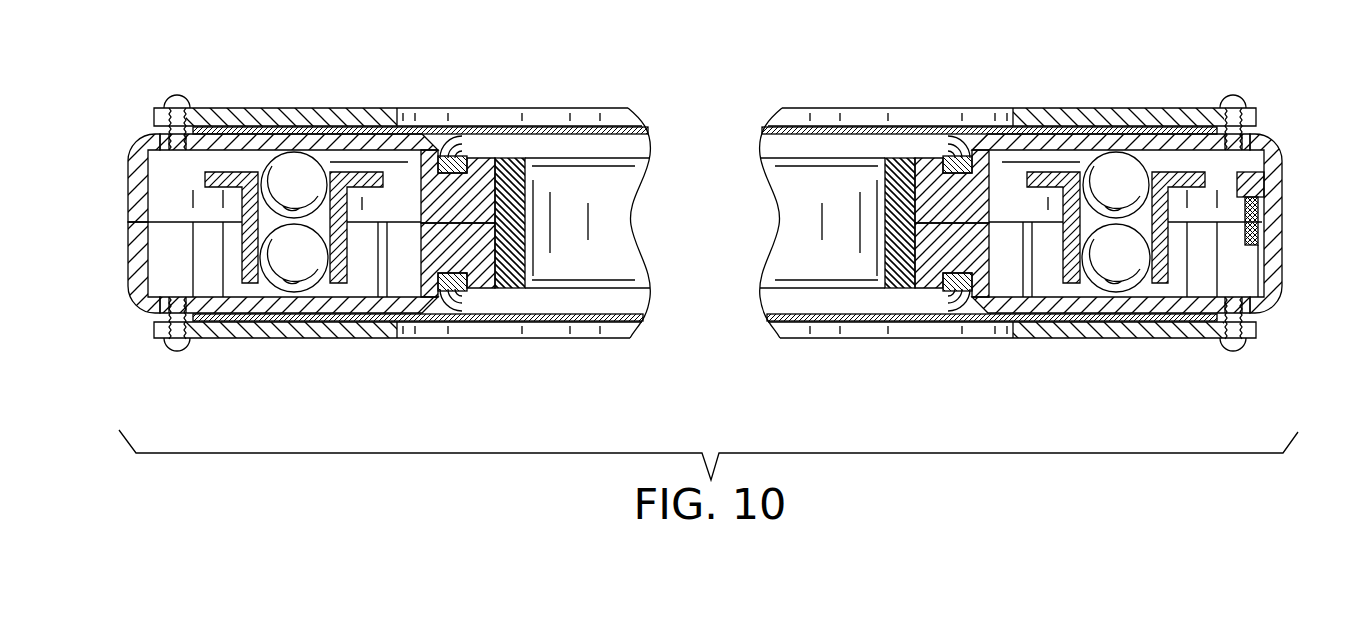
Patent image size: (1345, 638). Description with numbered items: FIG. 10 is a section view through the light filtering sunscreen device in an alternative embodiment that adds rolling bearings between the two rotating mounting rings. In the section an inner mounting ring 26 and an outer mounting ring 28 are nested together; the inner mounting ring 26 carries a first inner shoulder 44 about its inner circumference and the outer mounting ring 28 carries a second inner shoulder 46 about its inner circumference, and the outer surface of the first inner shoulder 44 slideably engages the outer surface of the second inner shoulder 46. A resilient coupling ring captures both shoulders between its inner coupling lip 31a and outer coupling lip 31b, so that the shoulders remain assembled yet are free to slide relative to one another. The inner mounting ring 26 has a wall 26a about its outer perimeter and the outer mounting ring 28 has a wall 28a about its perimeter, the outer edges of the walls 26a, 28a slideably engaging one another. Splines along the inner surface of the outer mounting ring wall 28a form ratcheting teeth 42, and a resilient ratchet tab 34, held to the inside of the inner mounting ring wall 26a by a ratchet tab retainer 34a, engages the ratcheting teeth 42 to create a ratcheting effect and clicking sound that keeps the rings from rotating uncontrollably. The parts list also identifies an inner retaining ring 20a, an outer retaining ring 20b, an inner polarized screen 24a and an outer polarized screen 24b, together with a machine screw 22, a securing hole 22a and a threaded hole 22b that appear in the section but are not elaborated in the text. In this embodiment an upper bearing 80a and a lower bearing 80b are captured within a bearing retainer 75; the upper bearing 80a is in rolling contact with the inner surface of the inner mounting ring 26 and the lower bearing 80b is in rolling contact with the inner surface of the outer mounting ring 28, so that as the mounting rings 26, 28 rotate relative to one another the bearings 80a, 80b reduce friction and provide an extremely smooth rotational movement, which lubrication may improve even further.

The inner retaining ring 20a is at (503, 118).
The outer retaining ring 20b is at (313, 335).
The machine screw 22 is at (177, 97).
The securing hole 22a is at (187, 120).
The threaded hole 22b is at (195, 143).
The inner polarized screen 24a is at (563, 129).
The outer polarized screen 24b is at (557, 320).
The inner mounting ring 26 is at (267, 143).
The inner mounting ring wall 26a is at (129, 177).
The outer mounting ring 28 is at (270, 307).
The outer mounting ring wall 28a is at (130, 270).
The inner coupling lip 31a is at (452, 163).
The outer coupling lip 31b is at (450, 280).
The ratchet tab 34 is at (1255, 210).
The ratchet tab retainer 34a is at (1250, 180).
The ratcheting teeth 42 is at (1255, 253).
The first inner shoulder 44 is at (467, 193).
The second inner shoulder 46 is at (468, 250).
The bearing retainer 75 is at (340, 265).
The upper bearing 80a is at (307, 167).
The lower bearing 80b is at (307, 262).